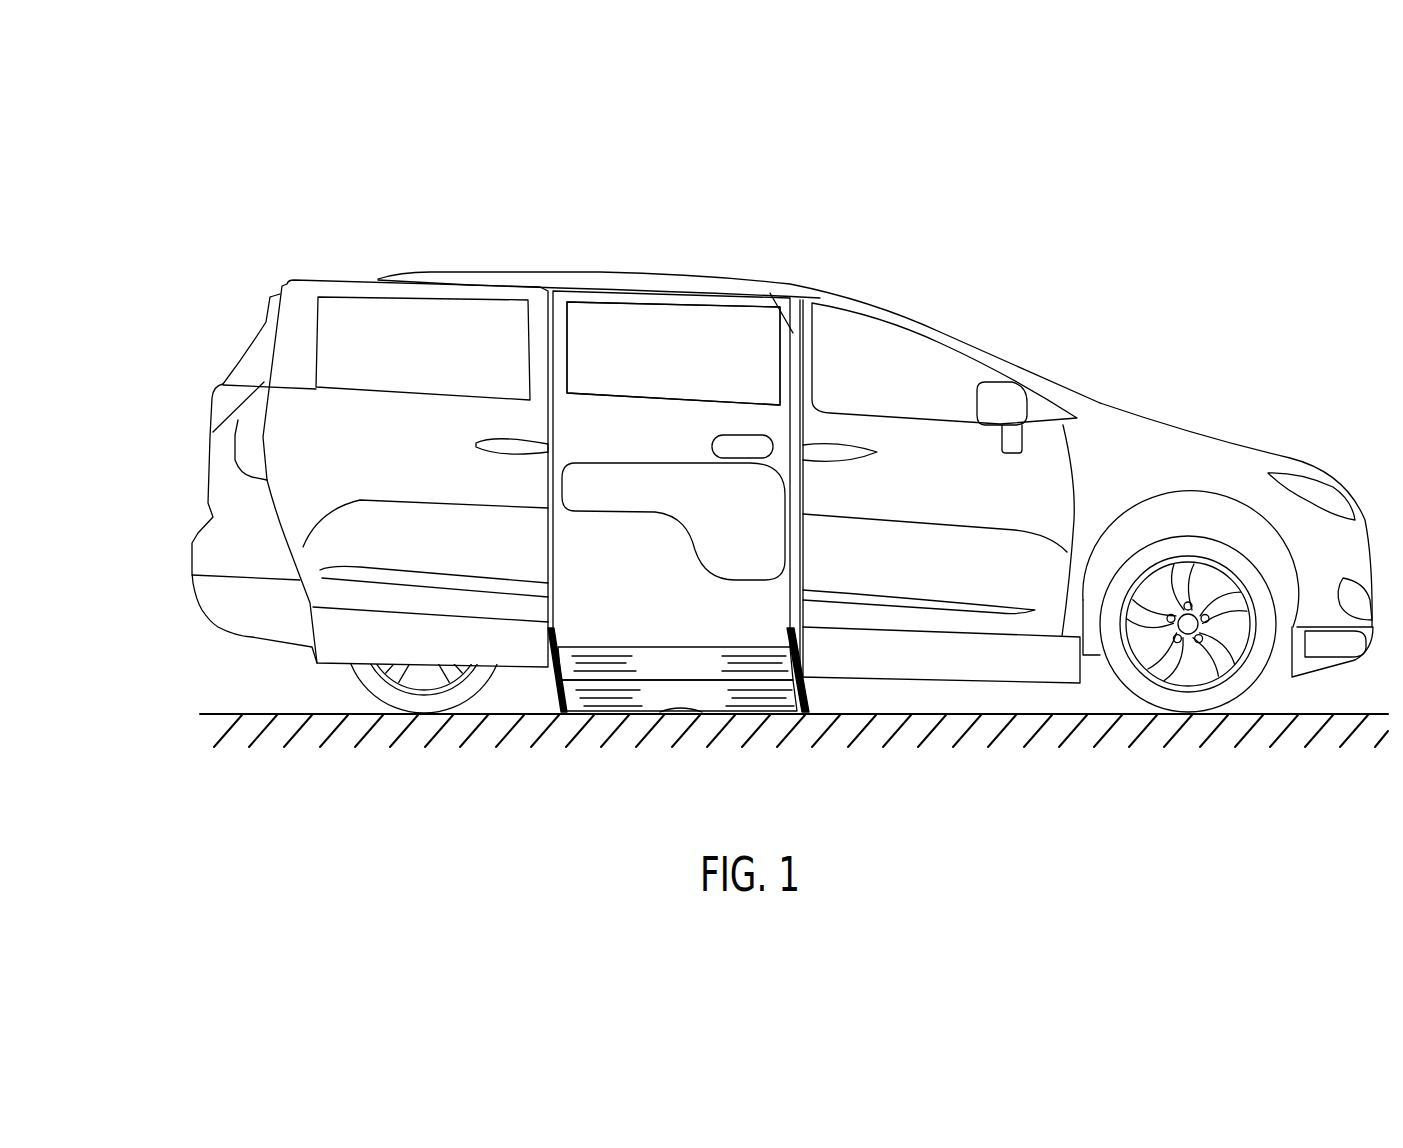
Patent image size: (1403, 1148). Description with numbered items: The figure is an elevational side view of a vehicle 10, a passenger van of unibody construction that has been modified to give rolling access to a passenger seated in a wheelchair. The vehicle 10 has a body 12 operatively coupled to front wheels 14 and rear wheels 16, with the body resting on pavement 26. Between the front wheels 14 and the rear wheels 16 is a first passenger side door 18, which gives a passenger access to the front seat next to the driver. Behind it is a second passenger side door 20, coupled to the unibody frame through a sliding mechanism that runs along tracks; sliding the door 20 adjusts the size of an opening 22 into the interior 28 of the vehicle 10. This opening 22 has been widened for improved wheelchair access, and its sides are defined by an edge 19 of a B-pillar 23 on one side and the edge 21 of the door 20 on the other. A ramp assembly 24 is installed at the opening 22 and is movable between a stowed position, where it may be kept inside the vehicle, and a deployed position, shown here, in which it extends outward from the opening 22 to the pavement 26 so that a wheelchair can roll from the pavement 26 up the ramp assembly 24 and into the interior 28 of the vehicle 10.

The vehicle 10 is at (1072, 191).
The body 12 is at (1197, 447).
The front wheels 14 is at (1185, 705).
The rear wheels 16 is at (427, 705).
The first passenger side door 18 is at (937, 623).
The edge of the B-pillar 19 is at (786, 592).
The second passenger side door 20 is at (292, 413).
The edge of the door 21 is at (556, 538).
The opening 22 is at (682, 343).
The B-pillar 23 is at (793, 370).
The ramp assembly 24 is at (713, 698).
The pavement 26 is at (238, 714).
The interior 28 is at (682, 439).